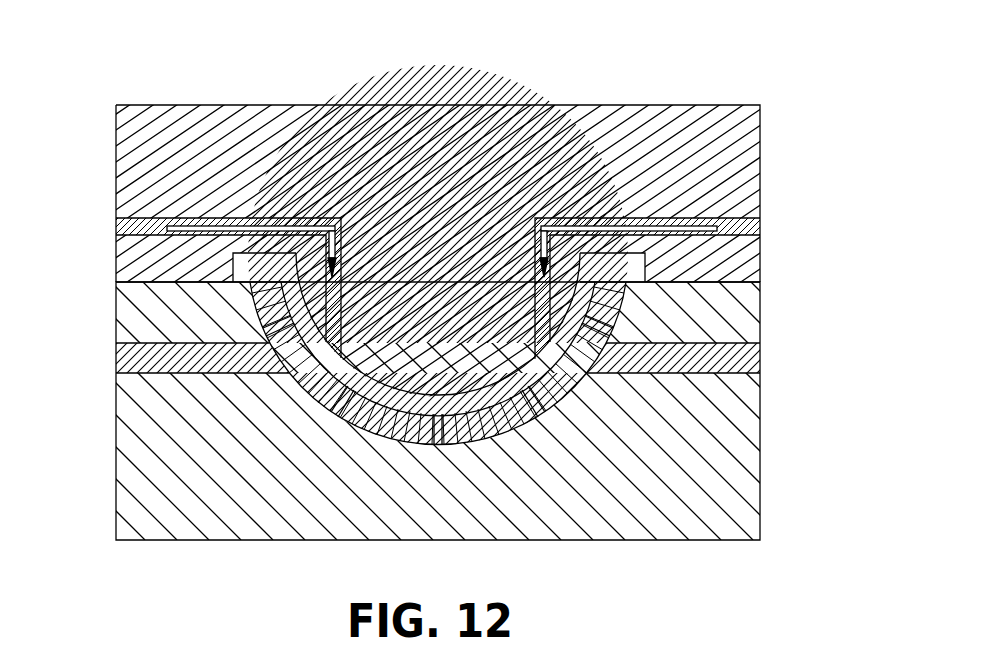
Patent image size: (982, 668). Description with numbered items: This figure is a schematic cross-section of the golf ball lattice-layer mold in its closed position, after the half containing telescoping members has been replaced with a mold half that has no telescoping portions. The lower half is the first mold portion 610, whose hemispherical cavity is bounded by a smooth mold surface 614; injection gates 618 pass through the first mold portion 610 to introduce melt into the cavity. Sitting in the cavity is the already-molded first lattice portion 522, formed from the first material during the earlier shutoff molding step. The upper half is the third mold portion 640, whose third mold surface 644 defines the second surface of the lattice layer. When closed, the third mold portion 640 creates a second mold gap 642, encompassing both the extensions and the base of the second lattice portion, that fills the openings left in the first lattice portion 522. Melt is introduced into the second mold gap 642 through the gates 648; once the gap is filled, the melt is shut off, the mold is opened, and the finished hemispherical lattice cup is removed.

The third mold portion 640 is at (612, 104).
The gates 648 is at (115, 232).
The injection gates 618 is at (115, 353).
The first mold portion 610 is at (762, 470).
The first lattice portion 522 is at (478, 430).
The second mold gap 642 is at (437, 448).
The third mold surface 644 is at (402, 400).
The mold surface 614 is at (556, 410).